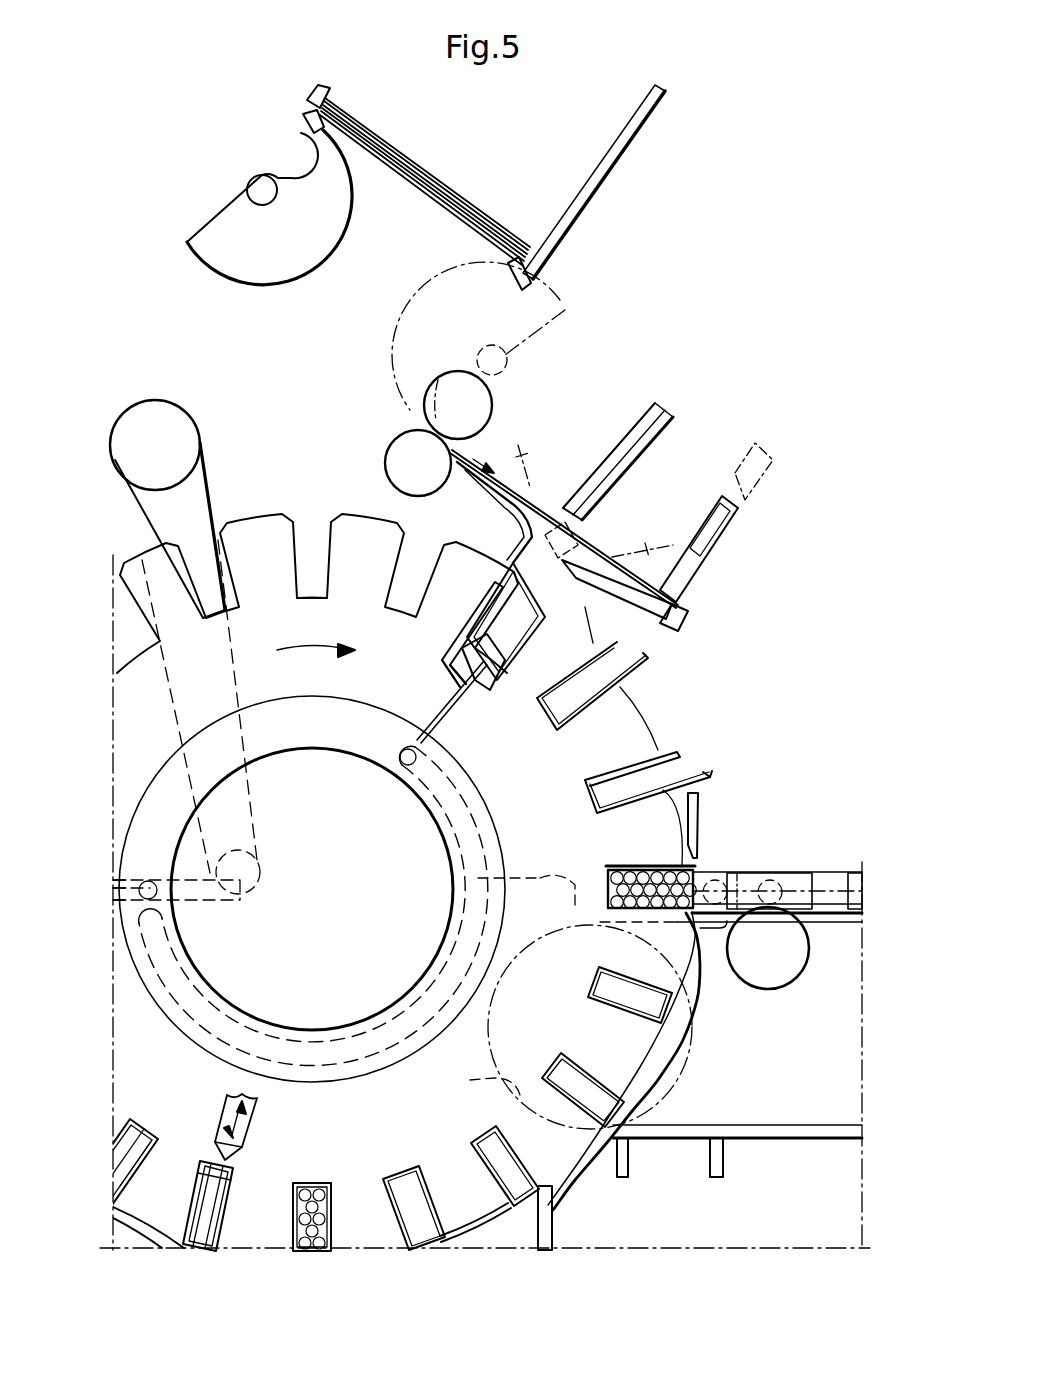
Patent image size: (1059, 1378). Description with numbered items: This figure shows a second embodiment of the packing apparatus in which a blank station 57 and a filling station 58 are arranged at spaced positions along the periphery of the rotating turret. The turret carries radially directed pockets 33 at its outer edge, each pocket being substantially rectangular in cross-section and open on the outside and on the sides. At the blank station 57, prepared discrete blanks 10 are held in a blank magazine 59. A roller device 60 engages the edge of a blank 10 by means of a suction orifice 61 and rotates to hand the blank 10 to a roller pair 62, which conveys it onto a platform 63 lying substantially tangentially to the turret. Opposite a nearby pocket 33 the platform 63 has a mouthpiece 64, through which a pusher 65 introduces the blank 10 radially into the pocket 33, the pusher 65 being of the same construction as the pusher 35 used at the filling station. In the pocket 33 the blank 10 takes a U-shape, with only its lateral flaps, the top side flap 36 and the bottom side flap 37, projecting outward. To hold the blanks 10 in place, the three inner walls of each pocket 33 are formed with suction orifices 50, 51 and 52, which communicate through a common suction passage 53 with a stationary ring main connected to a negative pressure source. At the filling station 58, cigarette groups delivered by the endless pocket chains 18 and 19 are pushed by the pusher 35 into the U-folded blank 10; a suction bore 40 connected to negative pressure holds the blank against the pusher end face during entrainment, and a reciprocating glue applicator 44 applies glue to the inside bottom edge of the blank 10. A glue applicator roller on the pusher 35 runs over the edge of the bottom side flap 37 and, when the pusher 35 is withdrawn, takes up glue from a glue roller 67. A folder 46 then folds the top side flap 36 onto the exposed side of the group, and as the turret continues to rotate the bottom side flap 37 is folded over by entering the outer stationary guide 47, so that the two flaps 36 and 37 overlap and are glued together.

The blank 10 is at (467, 200).
The endless pocket chain 18 is at (737, 1162).
The endless pocket chain 19 is at (760, 1138).
The pocket 33 is at (308, 540).
The pusher 35 is at (825, 878).
The top side flap 36 is at (677, 750).
The bottom side flap 37 is at (697, 772).
The suction bore 40 is at (593, 492).
The glue applicator 44 is at (723, 535).
The folder 46 is at (700, 807).
The outer stationary guide 47 is at (570, 1182).
The suction orifice 50 is at (497, 582).
The suction orifice 51 is at (537, 612).
The suction orifice 52 is at (483, 662).
The common suction passage 53 is at (445, 705).
The blank station 57 is at (688, 450).
The filling station 58 is at (731, 905).
The blank magazine 59 is at (592, 209).
The roller device 60 is at (280, 295).
The suction orifice 61 is at (300, 117).
The roller pair 62 is at (433, 468).
The platform 63 is at (668, 632).
The mouthpiece 64 is at (520, 542).
The pusher 65 is at (658, 410).
The glue roller 67 is at (792, 973).